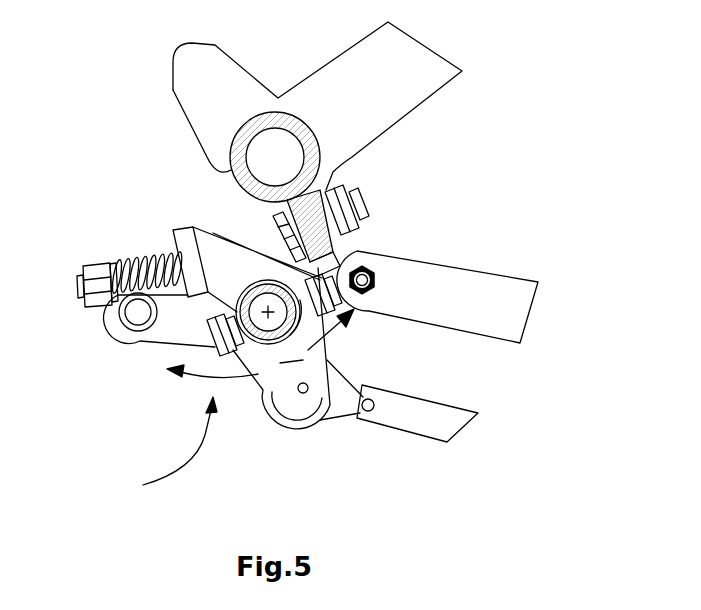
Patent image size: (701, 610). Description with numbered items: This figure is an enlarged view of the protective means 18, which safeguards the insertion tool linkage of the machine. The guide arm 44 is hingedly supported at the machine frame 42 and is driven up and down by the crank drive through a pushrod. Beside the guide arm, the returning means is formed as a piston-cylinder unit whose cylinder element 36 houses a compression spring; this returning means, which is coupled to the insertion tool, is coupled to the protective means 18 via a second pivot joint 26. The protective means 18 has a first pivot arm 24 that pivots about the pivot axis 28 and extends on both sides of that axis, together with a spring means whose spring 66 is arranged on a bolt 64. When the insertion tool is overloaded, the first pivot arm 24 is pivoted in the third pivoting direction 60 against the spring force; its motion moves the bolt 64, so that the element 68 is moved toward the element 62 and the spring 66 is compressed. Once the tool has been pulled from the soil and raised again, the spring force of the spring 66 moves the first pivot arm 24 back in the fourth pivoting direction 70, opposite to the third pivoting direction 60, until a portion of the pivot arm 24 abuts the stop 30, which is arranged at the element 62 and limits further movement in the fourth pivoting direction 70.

The protective means 18 is at (166, 450).
The first pivot arm 24 is at (308, 367).
The second pivot joint 26 is at (306, 390).
The pivot axis 28 is at (268, 308).
The stop 30 is at (314, 272).
The cylinder element 36 is at (445, 412).
The machine frame 42 is at (310, 228).
The guide arm 44 is at (492, 292).
The third pivoting direction 60 is at (212, 378).
The element 62 is at (205, 248).
The bolt 64 is at (158, 250).
The spring 66 is at (118, 264).
The element 68 is at (90, 264).
The fourth pivoting direction 70 is at (320, 339).